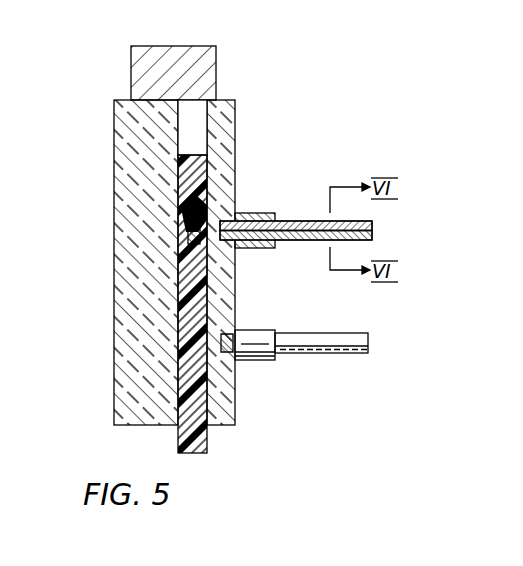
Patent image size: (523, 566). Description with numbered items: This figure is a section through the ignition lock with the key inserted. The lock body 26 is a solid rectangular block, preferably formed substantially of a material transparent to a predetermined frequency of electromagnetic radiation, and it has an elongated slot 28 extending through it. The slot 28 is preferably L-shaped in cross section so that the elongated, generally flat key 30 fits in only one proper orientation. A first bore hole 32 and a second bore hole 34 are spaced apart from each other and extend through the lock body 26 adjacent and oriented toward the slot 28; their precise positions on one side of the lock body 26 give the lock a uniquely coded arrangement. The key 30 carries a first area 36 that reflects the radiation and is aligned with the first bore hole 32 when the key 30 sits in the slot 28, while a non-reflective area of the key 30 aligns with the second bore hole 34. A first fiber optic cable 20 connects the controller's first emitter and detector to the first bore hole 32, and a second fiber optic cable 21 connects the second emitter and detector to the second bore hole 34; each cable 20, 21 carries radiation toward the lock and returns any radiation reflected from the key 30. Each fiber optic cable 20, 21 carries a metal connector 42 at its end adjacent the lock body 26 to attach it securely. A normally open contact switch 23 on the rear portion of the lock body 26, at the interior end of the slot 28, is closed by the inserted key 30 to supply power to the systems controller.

The first fiber optic cable 20 is at (298, 221).
The second fiber optic cable 21 is at (332, 353).
The contact switch 23 is at (207, 46).
The lock body 26 is at (114, 272).
The slot 28 is at (215, 128).
The key 30 is at (207, 446).
The first bore hole 32 is at (206, 216).
The second bore hole 34 is at (228, 352).
The first area 36 is at (196, 206).
The metal connector 42 is at (258, 248).